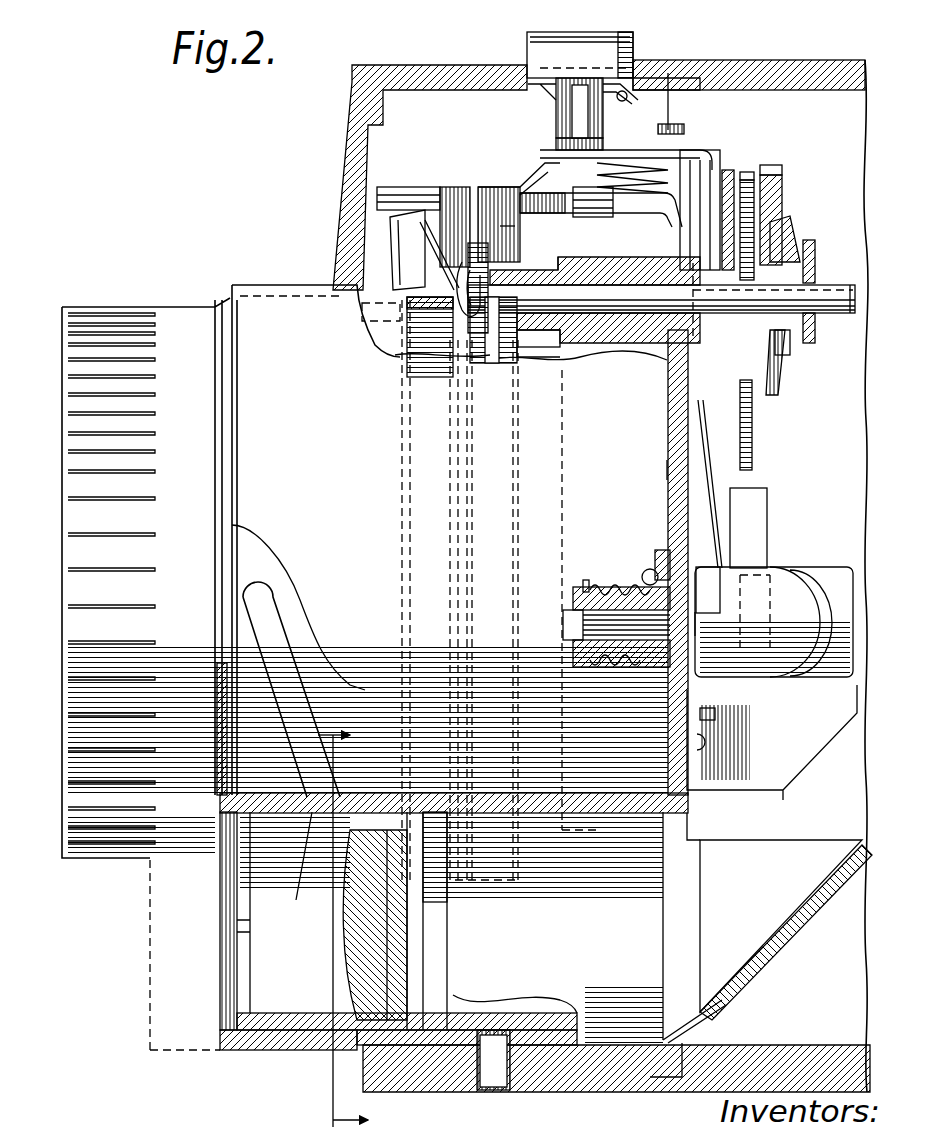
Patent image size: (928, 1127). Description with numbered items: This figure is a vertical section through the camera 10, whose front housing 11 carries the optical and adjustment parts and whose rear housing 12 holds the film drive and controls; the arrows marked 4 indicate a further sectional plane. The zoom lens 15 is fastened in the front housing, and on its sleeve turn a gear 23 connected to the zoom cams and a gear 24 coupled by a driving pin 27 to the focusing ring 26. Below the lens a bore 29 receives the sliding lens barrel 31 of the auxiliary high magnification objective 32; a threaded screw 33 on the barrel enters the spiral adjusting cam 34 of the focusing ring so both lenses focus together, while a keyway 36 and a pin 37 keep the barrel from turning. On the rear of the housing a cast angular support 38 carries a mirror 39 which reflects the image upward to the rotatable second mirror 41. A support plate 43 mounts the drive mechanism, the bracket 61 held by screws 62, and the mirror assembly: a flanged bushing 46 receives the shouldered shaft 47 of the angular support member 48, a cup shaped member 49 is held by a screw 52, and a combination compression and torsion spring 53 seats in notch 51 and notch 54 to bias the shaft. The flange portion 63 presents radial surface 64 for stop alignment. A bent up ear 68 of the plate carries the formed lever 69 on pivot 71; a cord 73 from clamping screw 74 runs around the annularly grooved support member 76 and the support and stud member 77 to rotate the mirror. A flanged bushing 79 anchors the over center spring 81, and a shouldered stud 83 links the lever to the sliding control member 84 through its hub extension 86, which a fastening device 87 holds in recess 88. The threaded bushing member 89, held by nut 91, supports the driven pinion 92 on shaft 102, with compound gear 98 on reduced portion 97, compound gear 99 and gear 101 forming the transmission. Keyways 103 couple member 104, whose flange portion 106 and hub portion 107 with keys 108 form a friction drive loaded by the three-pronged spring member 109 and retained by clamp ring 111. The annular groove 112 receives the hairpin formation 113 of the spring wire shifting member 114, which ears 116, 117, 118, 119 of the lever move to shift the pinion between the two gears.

The camera 10 is at (697, 62).
The front housing 11 is at (423, 70).
The rear housing 12 is at (762, 62).
The zoom lens 15 is at (228, 290).
The gear 23 is at (523, 348).
The gear 24 is at (405, 362).
The focusing ring 26 is at (162, 313).
The driving pin 27 is at (381, 327).
The bore 29 is at (435, 1025).
The lens barrel 31 is at (298, 1050).
The auxiliary high magnification objective 32 is at (345, 969).
The threaded screw 33 is at (300, 870).
The spiral adjusting cam 34 is at (263, 592).
The keyway 36 is at (542, 1045).
The pin 37 is at (488, 1080).
The cast angular support 38 is at (728, 1012).
The mirror 39 is at (795, 928).
The rotatable second mirror 41 is at (815, 582).
The support plate 43 is at (668, 472).
The flanged bushing 46 is at (658, 552).
The shouldered shaft 47 is at (690, 575).
The angular support member 48 is at (745, 575).
The cup shaped member 49 is at (586, 590).
The notch 51 is at (602, 662).
The screw 52 is at (572, 612).
The combination compression and torsion spring 53 is at (620, 588).
The notch 54 is at (647, 572).
The bracket 61 is at (818, 718).
The screws 62 is at (708, 746).
The flange portion 63 is at (712, 720).
The radial surface 64 is at (712, 622).
The bent up ear 68 is at (570, 217).
The formed lever 69 is at (494, 184).
The pivot 71 is at (437, 185).
The cord 73 is at (710, 480).
The clamping screw 74 is at (678, 128).
The annularly grooved support member 76 is at (704, 165).
The combination annularly grooved support and stud member 77 is at (667, 406).
The flanged bushing 79 is at (552, 193).
The over center spring 81 is at (600, 180).
The shouldered stud 83 is at (556, 144).
The sliding control member 84 is at (634, 54).
The hub extension 86 is at (560, 97).
The fastening device 87 is at (620, 93).
The recess 88 is at (546, 75).
The externally threaded bushing member 89 is at (606, 268).
The nut 91 is at (590, 356).
The driven pinion 92 is at (490, 272).
The reduced portion 97 is at (661, 294).
The compound gear 98 is at (730, 180).
The compound gear 99 is at (754, 443).
The gear 101 is at (770, 186).
The shaft 102 is at (608, 283).
The keyways 103 is at (820, 290).
The member 104 is at (797, 258).
The flange portion 106 is at (747, 178).
The hub portion 107 is at (815, 330).
The keys 108 is at (815, 262).
The three-pronged spring member 109 is at (786, 385).
The clamp ring 111 is at (790, 348).
The annular groove 112 is at (465, 343).
The hairpin formation 113 is at (462, 264).
The spring wire shifting member 114 is at (445, 234).
The ear 116 is at (455, 208).
The ear 117 is at (398, 238).
The ear 118 is at (395, 250).
The ear 119 is at (505, 235).
The section line 4 is at (354, 924).